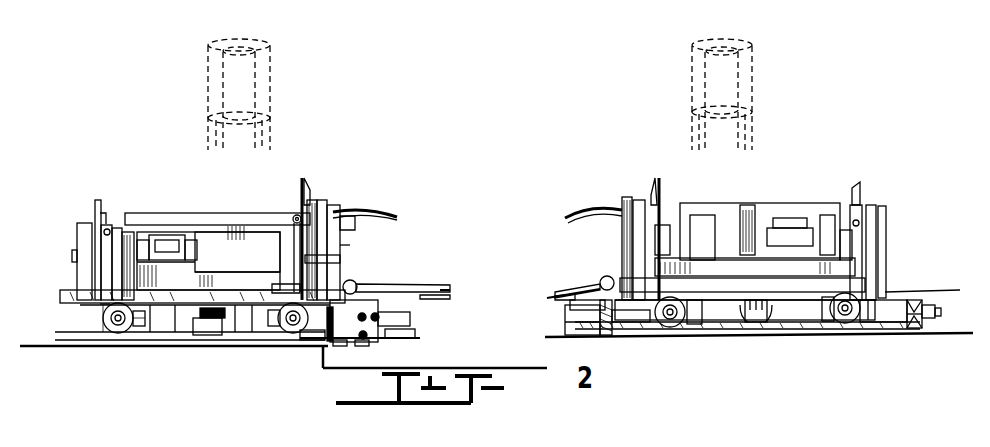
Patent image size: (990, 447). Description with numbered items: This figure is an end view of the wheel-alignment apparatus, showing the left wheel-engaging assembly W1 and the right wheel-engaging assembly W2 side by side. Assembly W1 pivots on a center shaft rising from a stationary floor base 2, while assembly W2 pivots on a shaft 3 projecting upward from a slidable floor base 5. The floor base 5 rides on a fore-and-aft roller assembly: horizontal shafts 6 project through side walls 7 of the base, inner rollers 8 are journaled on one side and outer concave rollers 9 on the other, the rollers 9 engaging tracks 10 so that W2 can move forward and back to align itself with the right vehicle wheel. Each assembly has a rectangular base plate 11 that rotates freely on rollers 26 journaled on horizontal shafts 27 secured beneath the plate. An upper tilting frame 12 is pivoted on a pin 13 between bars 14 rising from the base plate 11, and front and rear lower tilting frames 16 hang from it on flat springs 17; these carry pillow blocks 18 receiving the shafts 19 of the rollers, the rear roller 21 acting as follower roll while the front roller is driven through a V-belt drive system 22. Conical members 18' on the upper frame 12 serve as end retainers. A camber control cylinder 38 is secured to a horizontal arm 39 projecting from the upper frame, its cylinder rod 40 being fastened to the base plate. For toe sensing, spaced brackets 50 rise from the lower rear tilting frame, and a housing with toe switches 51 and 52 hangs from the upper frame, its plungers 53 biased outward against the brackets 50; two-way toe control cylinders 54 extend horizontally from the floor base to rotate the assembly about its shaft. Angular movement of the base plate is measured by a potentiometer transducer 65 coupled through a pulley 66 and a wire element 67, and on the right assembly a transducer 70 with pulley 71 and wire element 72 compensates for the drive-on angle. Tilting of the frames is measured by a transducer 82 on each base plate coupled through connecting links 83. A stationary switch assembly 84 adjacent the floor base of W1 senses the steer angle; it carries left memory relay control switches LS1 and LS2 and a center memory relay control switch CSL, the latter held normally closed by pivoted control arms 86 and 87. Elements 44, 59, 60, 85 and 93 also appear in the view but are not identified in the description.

The stationary floor base 2 is at (65, 347).
The shaft 3 is at (768, 316).
The slidable floor base 5 is at (734, 277).
The horizontal shafts 6 is at (612, 328).
The side walls 7 is at (585, 293).
The inner rollers 8 is at (603, 333).
The outer concave rollers 9 is at (932, 305).
The tracks 10 is at (916, 326).
The base plate 11 is at (250, 335).
The upper tilting frame 12 is at (120, 222).
The pin 13 is at (97, 225).
The bars 14 is at (80, 240).
The lower tilting frames 16 is at (100, 304).
The flat springs 17 is at (330, 240).
The pillow blocks 18 is at (629, 241).
The conical members 18' is at (504, 184).
The shafts 19 is at (78, 256).
The rear roller 21 is at (265, 240).
The V-belt drive system 22 is at (85, 222).
The rollers 26 is at (108, 330).
The horizontal shafts 27 is at (118, 320).
The camber control cylinder 38 is at (345, 245).
The horizontal arm 39 is at (340, 213).
The cylinder rod 40 is at (355, 283).
The cam arm 44 is at (380, 213).
The spaced brackets 50 is at (78, 283).
The toe switch 51 is at (175, 235).
The toe switch 52 is at (165, 240).
The plungers 53 is at (150, 232).
The toe control cylinders 54 is at (360, 285).
The link 59 is at (432, 297).
The connector 60 is at (442, 289).
The transducer 65 is at (220, 320).
The pulley 66 is at (212, 332).
The wire element 67 is at (162, 320).
The transducer 70 is at (575, 332).
The pulley 71 is at (555, 297).
The wire element 72 is at (578, 312).
The transducer 82 is at (276, 258).
The connecting links 83 is at (332, 260).
The switch assembly 84 is at (398, 323).
The contact 85 is at (363, 339).
The control arm 86 is at (415, 333).
The control arm 87 is at (338, 340).
The cable 93 is at (303, 340).
The left memory relay control switch LS1 is at (366, 314).
The left memory relay control switch LS2 is at (379, 318).
The center memory relay control switch CSL is at (370, 340).
The left wheel-engaging assembly W1 is at (305, 176).
The right wheel-engaging assembly W2 is at (853, 186).